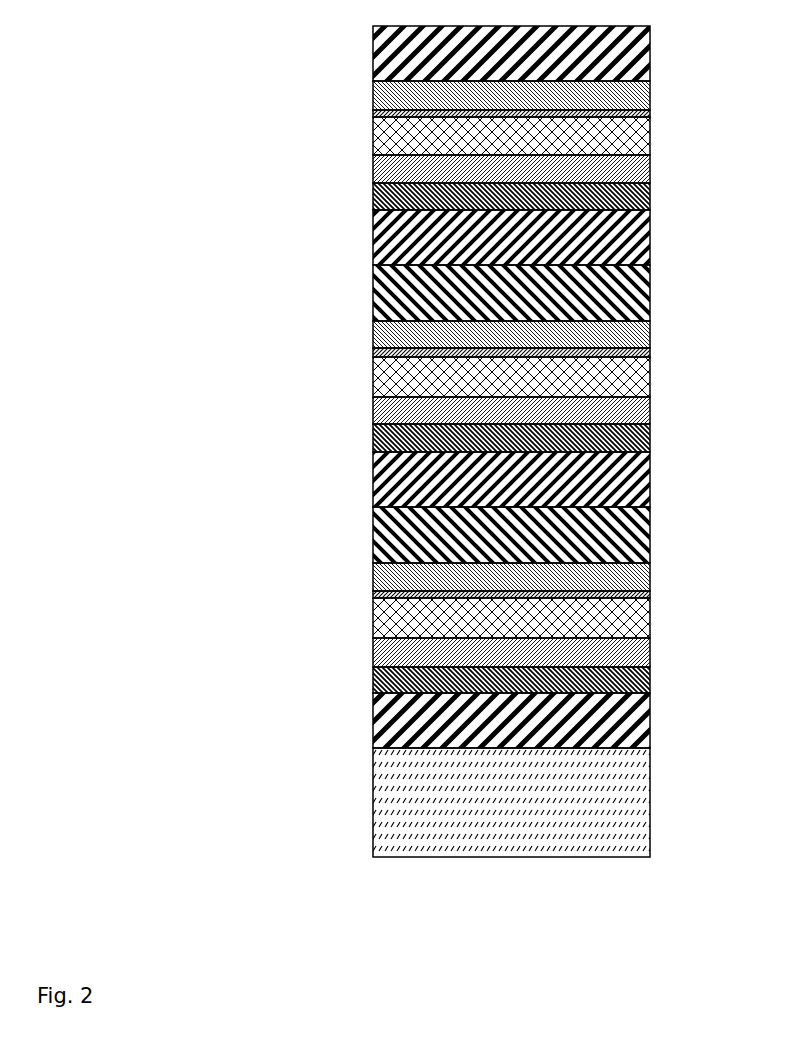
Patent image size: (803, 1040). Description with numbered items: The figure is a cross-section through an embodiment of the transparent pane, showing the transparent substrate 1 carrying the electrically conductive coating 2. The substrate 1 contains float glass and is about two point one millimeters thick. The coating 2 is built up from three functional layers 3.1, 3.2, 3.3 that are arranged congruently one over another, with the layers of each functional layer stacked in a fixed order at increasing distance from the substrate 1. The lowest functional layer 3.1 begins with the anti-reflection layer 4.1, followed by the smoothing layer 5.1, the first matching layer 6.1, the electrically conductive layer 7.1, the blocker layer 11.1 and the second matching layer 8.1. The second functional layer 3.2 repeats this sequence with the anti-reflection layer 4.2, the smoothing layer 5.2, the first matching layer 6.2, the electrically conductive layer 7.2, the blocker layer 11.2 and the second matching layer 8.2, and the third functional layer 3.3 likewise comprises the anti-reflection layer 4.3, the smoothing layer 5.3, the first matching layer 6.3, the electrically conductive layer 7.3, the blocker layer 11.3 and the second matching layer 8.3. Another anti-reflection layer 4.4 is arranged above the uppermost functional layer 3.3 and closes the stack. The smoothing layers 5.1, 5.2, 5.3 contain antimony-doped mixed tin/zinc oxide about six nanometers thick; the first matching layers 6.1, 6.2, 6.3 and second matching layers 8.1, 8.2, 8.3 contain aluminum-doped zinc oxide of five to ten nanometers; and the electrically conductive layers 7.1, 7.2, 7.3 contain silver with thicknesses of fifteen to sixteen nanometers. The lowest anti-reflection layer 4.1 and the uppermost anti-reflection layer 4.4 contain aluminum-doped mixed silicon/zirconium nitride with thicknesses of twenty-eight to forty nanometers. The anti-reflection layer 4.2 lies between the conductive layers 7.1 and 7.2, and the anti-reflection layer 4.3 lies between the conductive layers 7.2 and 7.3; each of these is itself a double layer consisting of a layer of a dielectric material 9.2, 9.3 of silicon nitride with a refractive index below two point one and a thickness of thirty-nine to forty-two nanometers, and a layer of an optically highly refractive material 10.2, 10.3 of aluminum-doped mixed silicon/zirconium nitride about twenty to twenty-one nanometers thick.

The transparent substrate 1 is at (548, 828).
The electrically conductive coating 2 is at (343, 27).
The functional layer 3.1 is at (355, 562).
The functional layer 3.2 is at (355, 321).
The functional layer 3.3 is at (350, 79).
The anti-reflection layer 4.1 is at (408, 722).
The anti-reflection layer 4.2 is at (360, 453).
The anti-reflection layer 4.3 is at (360, 212).
The anti-reflection layer 4.4 is at (408, 53).
The smoothing layer 5.1 is at (595, 682).
The smoothing layer 5.2 is at (595, 439).
The smoothing layer 5.3 is at (595, 197).
The first matching layer 6.1 is at (595, 652).
The first matching layer 6.2 is at (595, 409).
The first matching layer 6.3 is at (595, 167).
The electrically conductive layer 7.1 is at (595, 622).
The electrically conductive layer 7.2 is at (595, 379).
The electrically conductive layer 7.3 is at (595, 137).
The second matching layer 8.1 is at (595, 575).
The second matching layer 8.2 is at (595, 333).
The second matching layer 8.3 is at (595, 91).
The layer of a dielectric material 9.2 is at (595, 536).
The layer of a dielectric material 9.3 is at (595, 294).
The layer of an optically highly refractive material 10.2 is at (595, 479).
The layer of an optically highly refractive material 10.3 is at (595, 239).
The blocker layer 11.1 is at (375, 595).
The blocker layer 11.2 is at (375, 354).
The blocker layer 11.3 is at (375, 113).